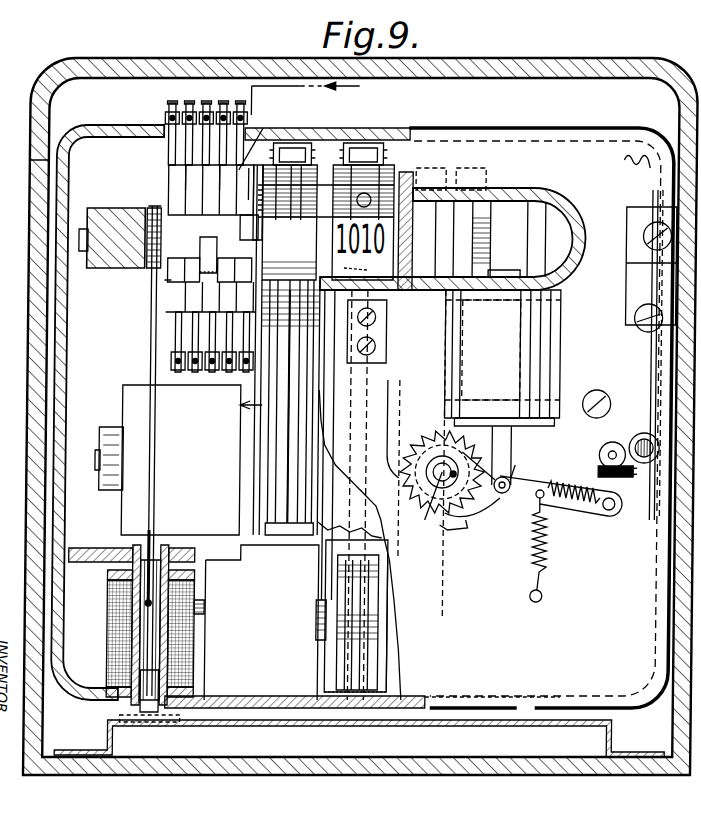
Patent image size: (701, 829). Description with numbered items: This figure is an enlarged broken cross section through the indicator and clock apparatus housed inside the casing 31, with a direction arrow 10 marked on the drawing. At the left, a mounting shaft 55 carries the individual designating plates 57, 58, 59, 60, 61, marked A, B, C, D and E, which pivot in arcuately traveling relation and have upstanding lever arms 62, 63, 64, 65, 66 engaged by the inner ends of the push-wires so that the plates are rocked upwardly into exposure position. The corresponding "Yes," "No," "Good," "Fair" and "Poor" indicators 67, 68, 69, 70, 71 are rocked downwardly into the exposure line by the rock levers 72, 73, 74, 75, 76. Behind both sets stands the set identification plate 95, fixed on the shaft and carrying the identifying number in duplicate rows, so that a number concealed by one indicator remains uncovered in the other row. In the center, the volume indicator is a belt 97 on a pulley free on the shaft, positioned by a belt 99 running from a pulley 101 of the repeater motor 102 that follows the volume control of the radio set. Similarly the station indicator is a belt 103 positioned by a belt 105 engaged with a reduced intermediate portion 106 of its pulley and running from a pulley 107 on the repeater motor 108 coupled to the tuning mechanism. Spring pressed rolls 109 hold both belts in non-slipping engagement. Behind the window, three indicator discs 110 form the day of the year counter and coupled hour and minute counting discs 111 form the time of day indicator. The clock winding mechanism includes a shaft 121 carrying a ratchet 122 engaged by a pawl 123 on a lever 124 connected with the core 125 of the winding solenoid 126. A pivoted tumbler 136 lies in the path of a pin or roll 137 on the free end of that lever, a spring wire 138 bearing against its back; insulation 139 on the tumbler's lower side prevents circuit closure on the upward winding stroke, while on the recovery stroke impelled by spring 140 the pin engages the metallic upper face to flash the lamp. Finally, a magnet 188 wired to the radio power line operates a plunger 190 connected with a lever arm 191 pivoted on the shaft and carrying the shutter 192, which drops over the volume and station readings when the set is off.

The direction indicator 10 is at (311, 257).
The casing 31 is at (518, 58).
The mounting shaft 55 is at (82, 240).
The designating plate 57 is at (190, 284).
The designating plate 58 is at (208, 288).
The designating plate 59 is at (226, 292).
The designating plate 60 is at (240, 300).
The designating plate 61 is at (248, 304).
The lever arm 62 is at (166, 113).
The lever arm 63 is at (186, 102).
The lever arm 64 is at (208, 100).
The lever arm 65 is at (238, 100).
The lever arm 66 is at (245, 120).
The indicator 67 is at (170, 197).
The indicator 68 is at (188, 187).
The indicator 69 is at (216, 165).
The indicator 70 is at (240, 168).
The indicator 71 is at (248, 178).
The rock lever 72 is at (176, 350).
The rock lever 73 is at (190, 374).
The rock lever 74 is at (208, 374).
The rock lever 75 is at (226, 374).
The rock lever 76 is at (244, 374).
The plate 95 is at (172, 280).
The belt 97 is at (318, 300).
The belt 99 is at (290, 368).
The pulley 101 is at (286, 418).
The repeater motor 102 is at (167, 460).
The belt 103 is at (444, 676).
The belt 105 is at (356, 614).
The reduced intermediate portion 106 is at (360, 545).
The pulley 107 is at (372, 633).
The repeater motor 108 is at (261, 622).
The spring pressed rolls 109 is at (352, 128).
The indicator discs 110 is at (440, 168).
The counting discs 111 is at (500, 170).
The shaft 121 is at (446, 490).
The ratchet 122 is at (447, 472).
The pawl 123 is at (472, 522).
The lever 124 is at (524, 508).
The core 125 is at (510, 440).
The winding solenoid 126 is at (548, 352).
The tumbler 136 is at (610, 442).
The pin or roll 137 is at (604, 514).
The spring wire 138 is at (648, 480).
The insulation 139 is at (606, 478).
The spring 140 is at (534, 556).
The magnet 188 is at (182, 616).
The plunger 190 is at (160, 517).
The lever arm 191 is at (150, 213).
The shutter 192 is at (412, 190).